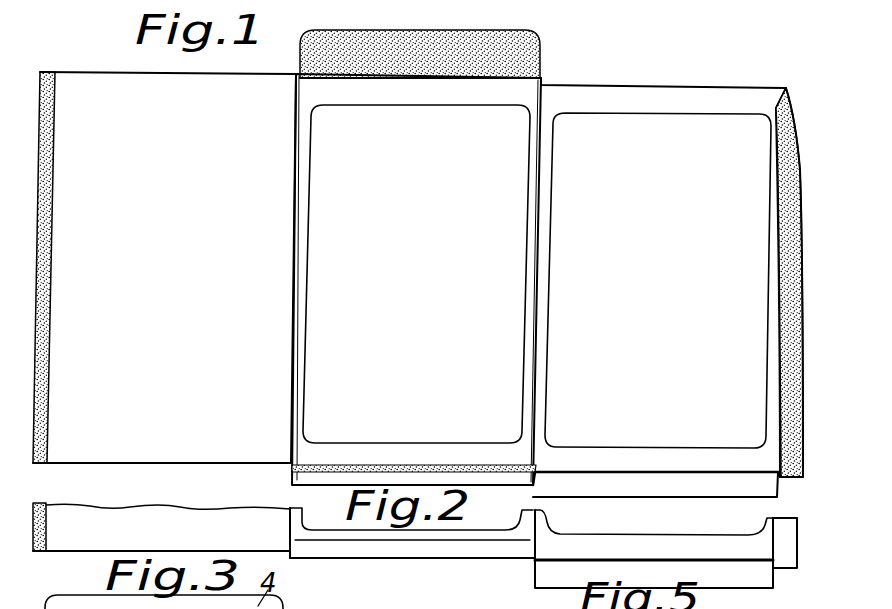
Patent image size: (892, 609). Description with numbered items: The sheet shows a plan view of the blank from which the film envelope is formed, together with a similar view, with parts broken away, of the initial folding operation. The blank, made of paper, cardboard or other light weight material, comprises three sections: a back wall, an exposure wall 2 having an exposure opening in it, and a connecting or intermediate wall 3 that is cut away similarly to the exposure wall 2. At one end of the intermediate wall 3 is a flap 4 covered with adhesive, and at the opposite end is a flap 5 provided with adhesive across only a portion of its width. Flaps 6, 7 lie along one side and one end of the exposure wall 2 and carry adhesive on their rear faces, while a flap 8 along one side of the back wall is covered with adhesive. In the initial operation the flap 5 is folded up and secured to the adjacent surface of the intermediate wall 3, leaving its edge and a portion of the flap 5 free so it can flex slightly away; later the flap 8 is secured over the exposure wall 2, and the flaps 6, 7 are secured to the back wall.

In FIG. 1, the exposure wall 2 is at (655, 92).
In FIG. 2, the exposure wall 2 is at (765, 530).
In FIG. 1, the intermediate wall 3 is at (470, 96).
In FIG. 2, the intermediate wall 3 is at (520, 518).
In FIG. 1, the flap 4 is at (533, 50).
In FIG. 1, the flap 5 is at (333, 470).
In FIG. 2, the flap 5 is at (438, 556).
In FIG. 1, the flap 6 is at (790, 387).
In FIG. 2, the flap 6 is at (787, 560).
In FIG. 1, the flap 7 is at (211, 83).
In FIG. 2, the flap 7 is at (165, 520).
In FIG. 1, the flap 8 is at (46, 318).
In FIG. 2, the flap 8 is at (50, 507).